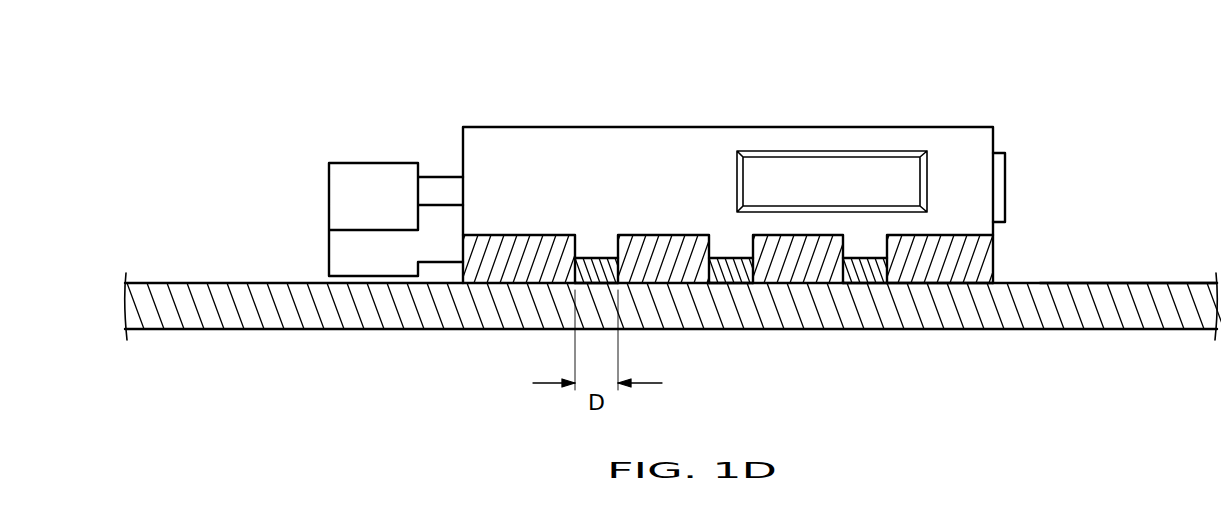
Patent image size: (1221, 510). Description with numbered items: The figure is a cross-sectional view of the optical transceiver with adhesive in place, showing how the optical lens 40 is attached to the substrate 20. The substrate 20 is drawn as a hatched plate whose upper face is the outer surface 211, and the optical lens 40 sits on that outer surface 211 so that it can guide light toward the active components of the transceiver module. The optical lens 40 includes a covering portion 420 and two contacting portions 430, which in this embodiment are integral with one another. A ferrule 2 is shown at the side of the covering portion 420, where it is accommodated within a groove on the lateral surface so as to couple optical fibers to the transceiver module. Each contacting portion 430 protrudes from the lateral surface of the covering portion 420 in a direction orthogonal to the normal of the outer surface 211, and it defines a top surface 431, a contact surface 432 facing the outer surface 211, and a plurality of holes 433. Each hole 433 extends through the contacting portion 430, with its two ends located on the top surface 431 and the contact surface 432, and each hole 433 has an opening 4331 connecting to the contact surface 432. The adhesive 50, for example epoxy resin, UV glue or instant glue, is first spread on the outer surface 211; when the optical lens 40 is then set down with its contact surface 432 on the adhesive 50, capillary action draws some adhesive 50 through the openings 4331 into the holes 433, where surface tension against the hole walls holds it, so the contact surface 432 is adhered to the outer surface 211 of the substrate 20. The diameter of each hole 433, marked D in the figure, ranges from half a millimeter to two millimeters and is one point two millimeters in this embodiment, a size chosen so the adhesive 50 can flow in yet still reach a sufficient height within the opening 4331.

The ferrule 2 is at (322, 200).
The substrate 20 is at (1016, 330).
The outer surface 211 is at (1137, 283).
The optical lens 40 is at (755, 217).
The covering portion 420 is at (568, 150).
The contacting portion 430 is at (772, 233).
The top surface 431 is at (957, 235).
The contact surface 432 is at (958, 236).
The hole 433 is at (713, 241).
The opening 4331 is at (596, 288).
The adhesive 50 is at (734, 268).